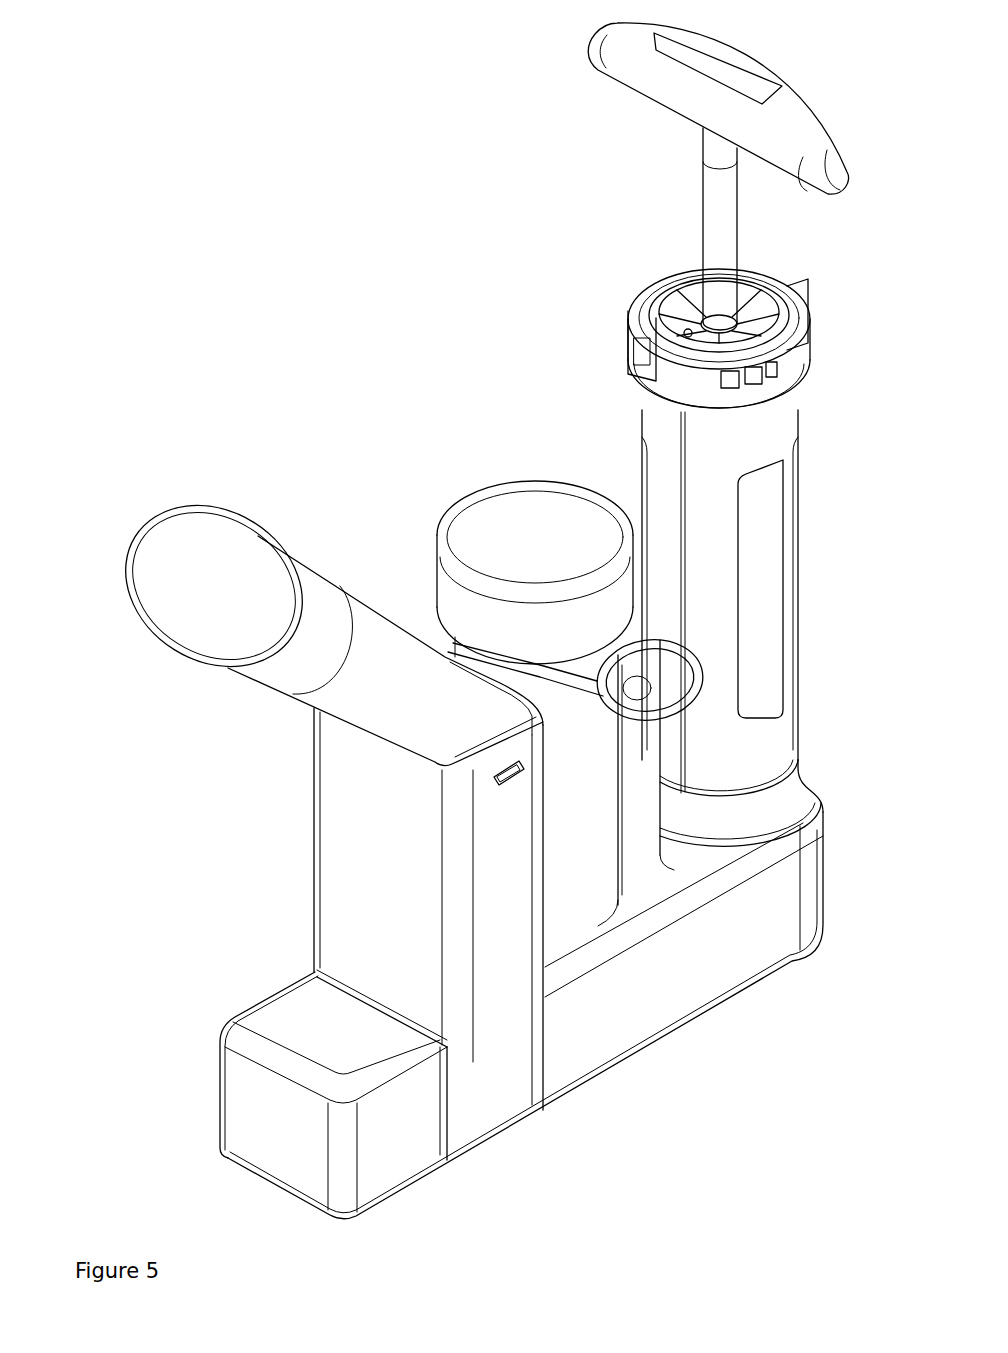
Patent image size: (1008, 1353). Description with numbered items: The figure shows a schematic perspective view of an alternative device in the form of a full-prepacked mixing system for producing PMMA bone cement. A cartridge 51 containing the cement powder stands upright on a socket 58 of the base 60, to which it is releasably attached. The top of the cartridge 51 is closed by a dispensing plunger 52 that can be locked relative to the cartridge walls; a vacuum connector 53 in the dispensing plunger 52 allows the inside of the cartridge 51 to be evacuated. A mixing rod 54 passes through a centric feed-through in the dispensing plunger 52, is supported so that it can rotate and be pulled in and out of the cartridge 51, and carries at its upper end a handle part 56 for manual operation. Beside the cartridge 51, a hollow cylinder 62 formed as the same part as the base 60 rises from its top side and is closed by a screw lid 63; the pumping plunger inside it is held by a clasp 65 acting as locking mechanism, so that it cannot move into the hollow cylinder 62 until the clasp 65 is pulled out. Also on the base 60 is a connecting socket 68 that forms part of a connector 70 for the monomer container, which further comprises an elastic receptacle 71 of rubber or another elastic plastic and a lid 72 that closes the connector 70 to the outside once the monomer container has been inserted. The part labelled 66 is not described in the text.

The cartridge 51 is at (755, 527).
The dispensing plunger 52 is at (778, 327).
The vacuum connector 53 is at (688, 333).
The mixing rod 54 is at (720, 247).
The handle part 56 is at (755, 128).
The socket 58 is at (755, 815).
The base 60 is at (693, 918).
The hollow cylinder 62 is at (585, 793).
The screw lid 63 is at (530, 527).
The clasp 65 is at (703, 683).
The tube wall 66 is at (640, 755).
The connecting socket 68 is at (500, 795).
The connector 70 is at (336, 522).
The elastic receptacle 71 is at (425, 670).
The lid 72 is at (257, 572).